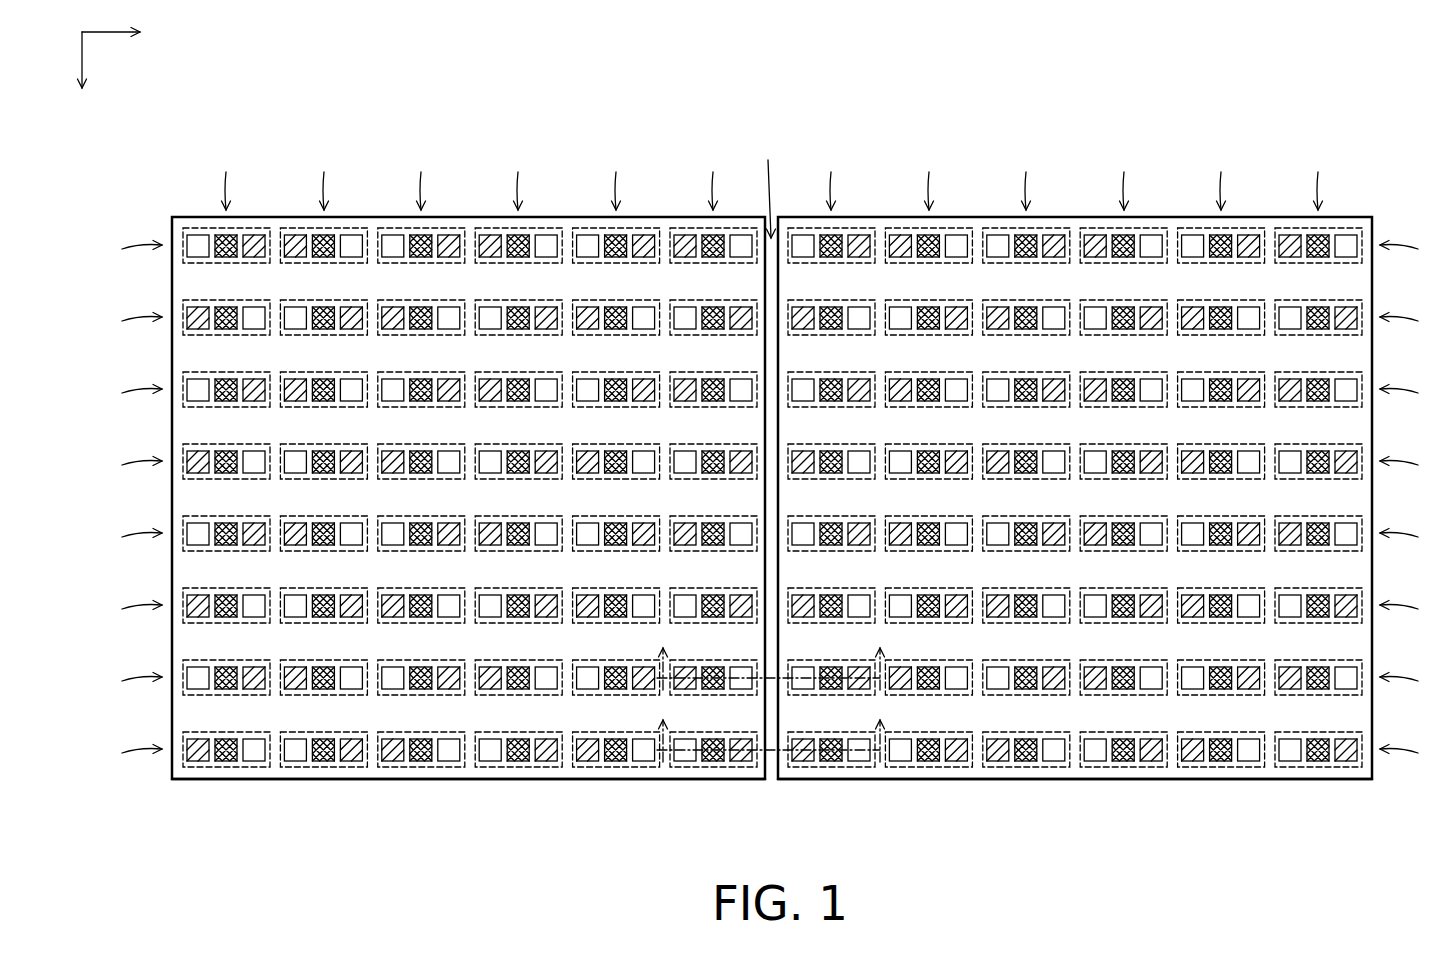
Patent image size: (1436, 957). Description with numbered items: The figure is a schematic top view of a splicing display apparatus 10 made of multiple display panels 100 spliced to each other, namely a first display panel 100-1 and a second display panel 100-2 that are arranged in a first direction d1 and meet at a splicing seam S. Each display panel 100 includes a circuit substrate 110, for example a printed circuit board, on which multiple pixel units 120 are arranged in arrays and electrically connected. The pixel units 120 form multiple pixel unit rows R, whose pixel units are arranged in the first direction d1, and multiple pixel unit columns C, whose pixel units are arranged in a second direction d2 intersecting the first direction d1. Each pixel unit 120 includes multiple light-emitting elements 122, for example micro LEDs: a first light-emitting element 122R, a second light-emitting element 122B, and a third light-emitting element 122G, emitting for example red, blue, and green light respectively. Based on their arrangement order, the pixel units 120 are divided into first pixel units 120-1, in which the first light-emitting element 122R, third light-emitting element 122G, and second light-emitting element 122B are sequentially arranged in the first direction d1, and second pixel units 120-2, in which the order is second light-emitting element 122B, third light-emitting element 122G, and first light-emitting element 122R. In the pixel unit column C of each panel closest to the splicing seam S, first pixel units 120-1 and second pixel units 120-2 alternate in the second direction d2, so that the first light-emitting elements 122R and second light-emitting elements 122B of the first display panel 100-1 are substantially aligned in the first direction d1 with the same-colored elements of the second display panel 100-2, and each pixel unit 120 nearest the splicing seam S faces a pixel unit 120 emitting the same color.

The splicing display apparatus 10 is at (1428, 855).
The display panel 100 is at (769, 449).
The first display panel 100-1 is at (1387, 222).
The second display panel 100-2 is at (157, 222).
The circuit substrate 110 is at (268, 781).
The pixel unit 120 is at (1124, 22).
The first pixel unit 120-1 is at (160, 645).
The second pixel unit 120-2 is at (293, 660).
The light-emitting element 122 is at (1262, 10).
The first light-emitting element 122R is at (670, 798).
The third light-emitting element 122G is at (706, 830).
The second light-emitting element 122B is at (622, 707).
The pixel unit column C is at (772, 174).
The pixel unit row R is at (768, 497).
The splicing seam S is at (769, 183).
The first direction d1 is at (127, 33).
The second direction d2 is at (78, 80).